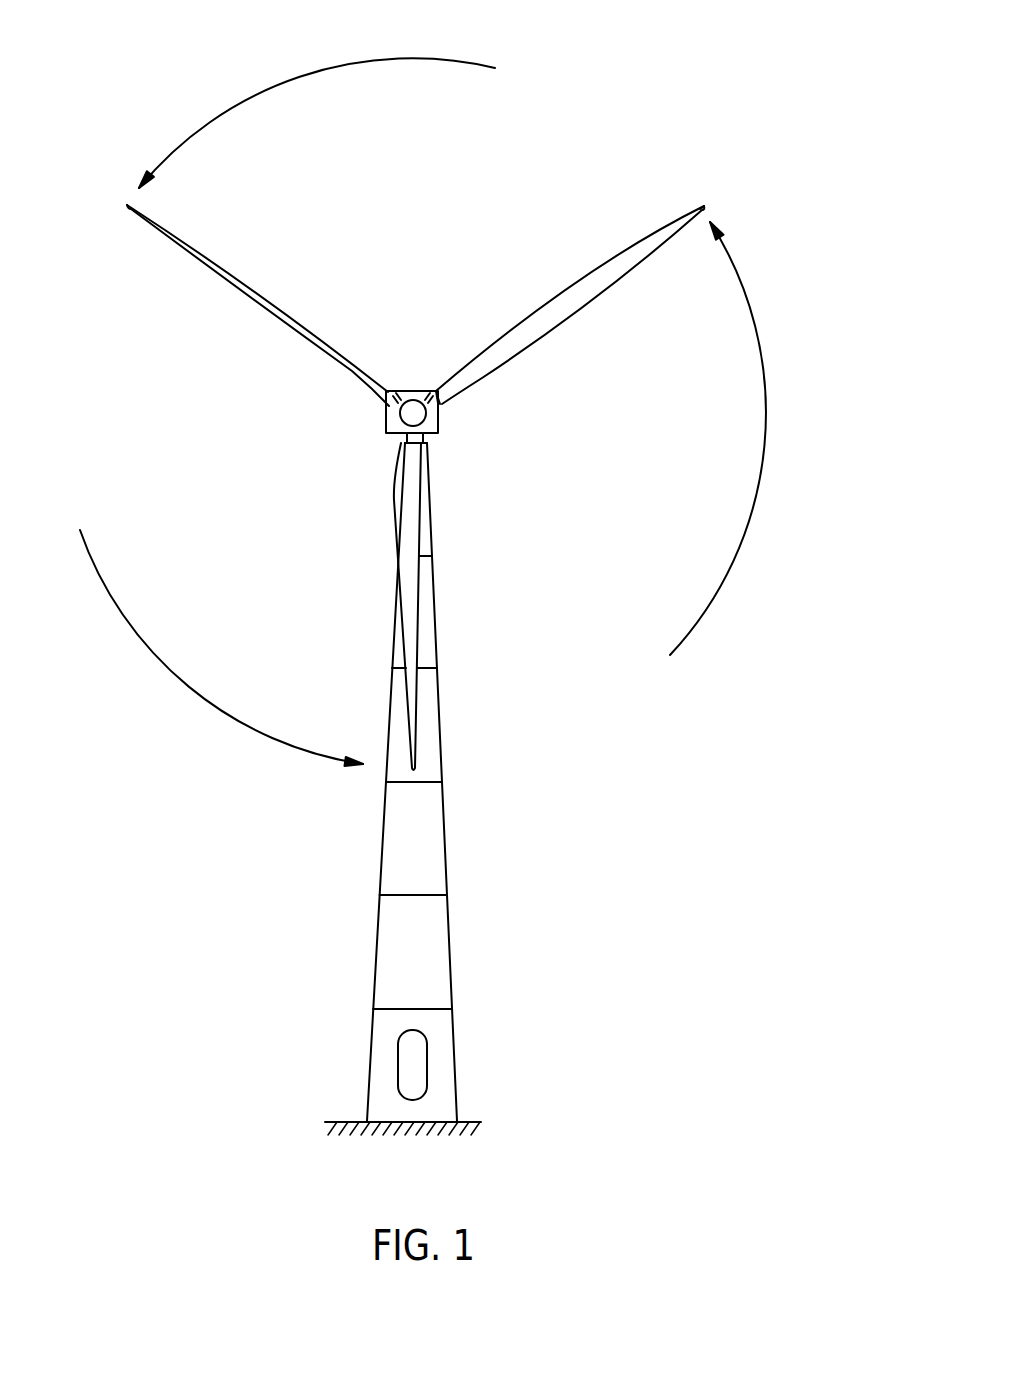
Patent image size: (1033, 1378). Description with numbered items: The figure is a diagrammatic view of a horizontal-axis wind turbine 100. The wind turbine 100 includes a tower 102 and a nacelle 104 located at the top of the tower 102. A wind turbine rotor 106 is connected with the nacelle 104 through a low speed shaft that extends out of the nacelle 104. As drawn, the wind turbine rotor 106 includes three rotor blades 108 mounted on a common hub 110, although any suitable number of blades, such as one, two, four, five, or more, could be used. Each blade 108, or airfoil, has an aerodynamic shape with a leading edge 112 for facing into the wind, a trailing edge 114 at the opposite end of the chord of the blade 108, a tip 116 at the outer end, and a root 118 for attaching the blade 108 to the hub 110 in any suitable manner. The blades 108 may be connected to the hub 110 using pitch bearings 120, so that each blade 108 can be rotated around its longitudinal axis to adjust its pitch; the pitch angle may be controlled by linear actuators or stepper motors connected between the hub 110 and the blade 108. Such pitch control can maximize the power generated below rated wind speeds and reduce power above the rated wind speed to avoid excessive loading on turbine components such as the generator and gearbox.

The horizontal-axis wind turbine 100 is at (344, 961).
The tower 102 is at (437, 850).
The nacelle 104 is at (440, 434).
The wind turbine rotor 106 is at (474, 456).
The rotor blade 108 is at (256, 294).
The hub 110 is at (412, 410).
The leading edge 112 is at (592, 277).
The trailing edge 114 is at (588, 305).
The tip 116 is at (720, 187).
The root 118 is at (468, 413).
The pitch bearing 120 is at (438, 403).